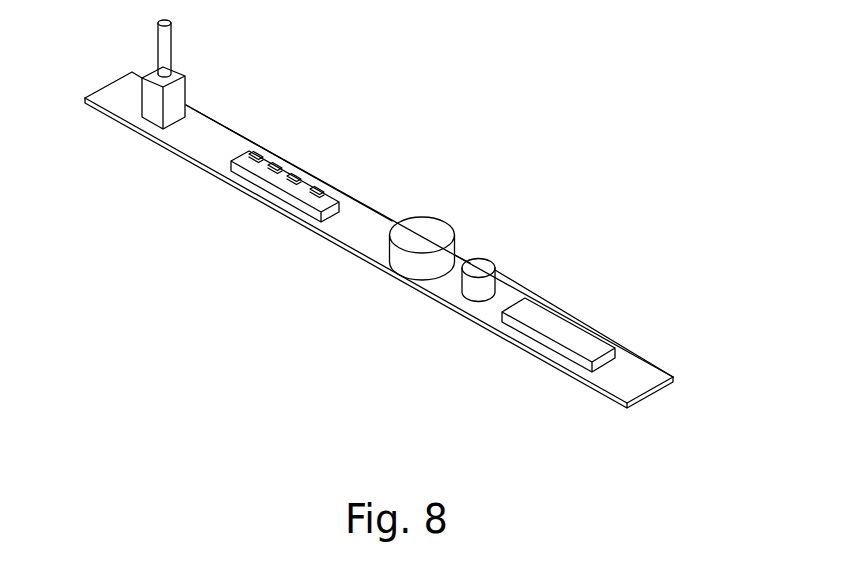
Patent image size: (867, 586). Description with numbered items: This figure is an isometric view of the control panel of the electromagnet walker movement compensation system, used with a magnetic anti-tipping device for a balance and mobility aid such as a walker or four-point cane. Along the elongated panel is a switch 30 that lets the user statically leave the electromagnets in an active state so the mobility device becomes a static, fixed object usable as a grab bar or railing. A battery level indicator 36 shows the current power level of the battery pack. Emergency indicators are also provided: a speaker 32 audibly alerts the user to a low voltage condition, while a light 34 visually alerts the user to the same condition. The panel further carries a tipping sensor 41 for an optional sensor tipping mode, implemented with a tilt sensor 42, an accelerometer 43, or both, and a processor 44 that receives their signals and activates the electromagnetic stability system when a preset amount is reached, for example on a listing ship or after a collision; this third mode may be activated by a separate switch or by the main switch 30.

The switch 30 is at (155, 100).
The speaker 32 is at (420, 261).
The light 34 is at (488, 263).
The battery level indicator 36 is at (567, 331).
The tipping sensor 41 is at (257, 160).
The tilt sensor 42 is at (282, 172).
The accelerometer 43 is at (297, 182).
The processor 44 is at (320, 198).